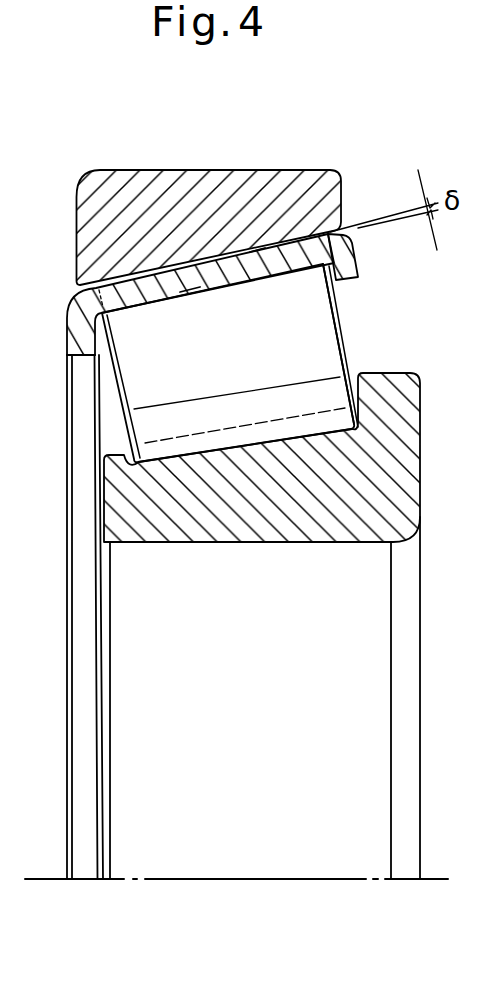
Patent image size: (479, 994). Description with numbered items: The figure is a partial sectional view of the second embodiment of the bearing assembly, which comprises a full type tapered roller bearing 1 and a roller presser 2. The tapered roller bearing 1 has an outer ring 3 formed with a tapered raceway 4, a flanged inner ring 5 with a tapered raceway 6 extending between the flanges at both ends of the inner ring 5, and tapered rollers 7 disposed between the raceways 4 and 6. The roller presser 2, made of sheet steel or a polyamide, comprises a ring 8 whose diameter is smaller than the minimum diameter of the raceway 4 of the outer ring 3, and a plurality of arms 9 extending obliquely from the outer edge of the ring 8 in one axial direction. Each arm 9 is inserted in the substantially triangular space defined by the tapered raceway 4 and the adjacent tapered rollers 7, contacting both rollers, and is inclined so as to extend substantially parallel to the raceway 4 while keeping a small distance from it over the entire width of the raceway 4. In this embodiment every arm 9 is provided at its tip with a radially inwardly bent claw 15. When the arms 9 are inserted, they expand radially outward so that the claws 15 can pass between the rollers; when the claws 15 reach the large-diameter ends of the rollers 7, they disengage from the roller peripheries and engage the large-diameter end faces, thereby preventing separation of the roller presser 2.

The tapered roller bearing 1 is at (304, 160).
The roller presser 2 is at (126, 268).
The outer ring 3 is at (152, 202).
The tapered raceway 4 is at (257, 247).
The flanged inner ring 5 is at (303, 518).
The tapered raceway 6 is at (232, 447).
The tapered rollers 7 is at (157, 425).
The ring 8 is at (87, 343).
The arms 9 is at (187, 283).
The claw 15 is at (356, 253).